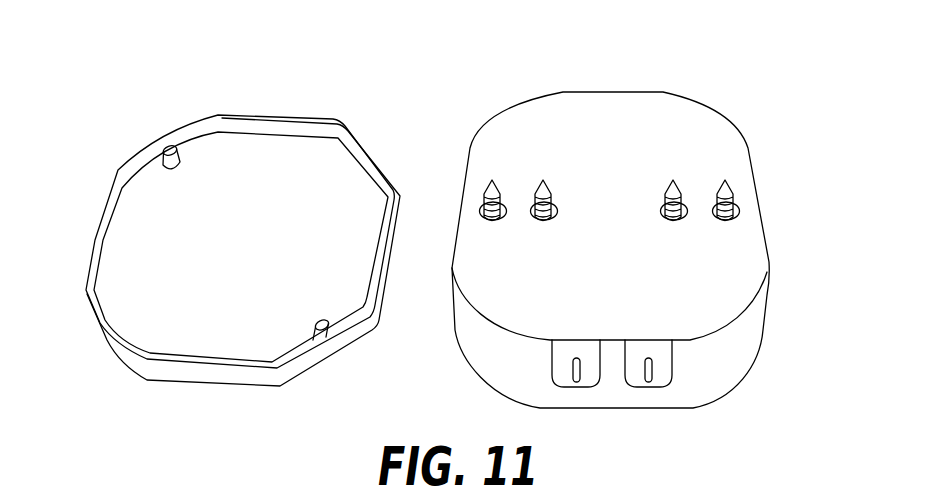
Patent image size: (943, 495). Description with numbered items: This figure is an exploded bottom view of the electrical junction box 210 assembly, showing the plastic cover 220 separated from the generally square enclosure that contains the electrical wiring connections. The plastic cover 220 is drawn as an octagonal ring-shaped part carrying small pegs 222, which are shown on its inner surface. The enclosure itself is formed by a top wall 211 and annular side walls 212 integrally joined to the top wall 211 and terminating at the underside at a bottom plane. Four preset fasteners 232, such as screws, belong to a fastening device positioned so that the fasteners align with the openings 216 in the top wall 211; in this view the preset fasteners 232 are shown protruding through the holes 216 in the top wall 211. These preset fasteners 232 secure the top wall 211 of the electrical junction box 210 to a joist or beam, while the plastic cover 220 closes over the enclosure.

The electrical junction box 210 is at (763, 322).
The top wall 211 is at (725, 122).
The annular side walls 212 is at (715, 357).
The openings 216 is at (531, 218).
The plastic cover 220 is at (313, 118).
The locating pegs 222 is at (180, 146).
The preset fasteners 232 is at (540, 187).